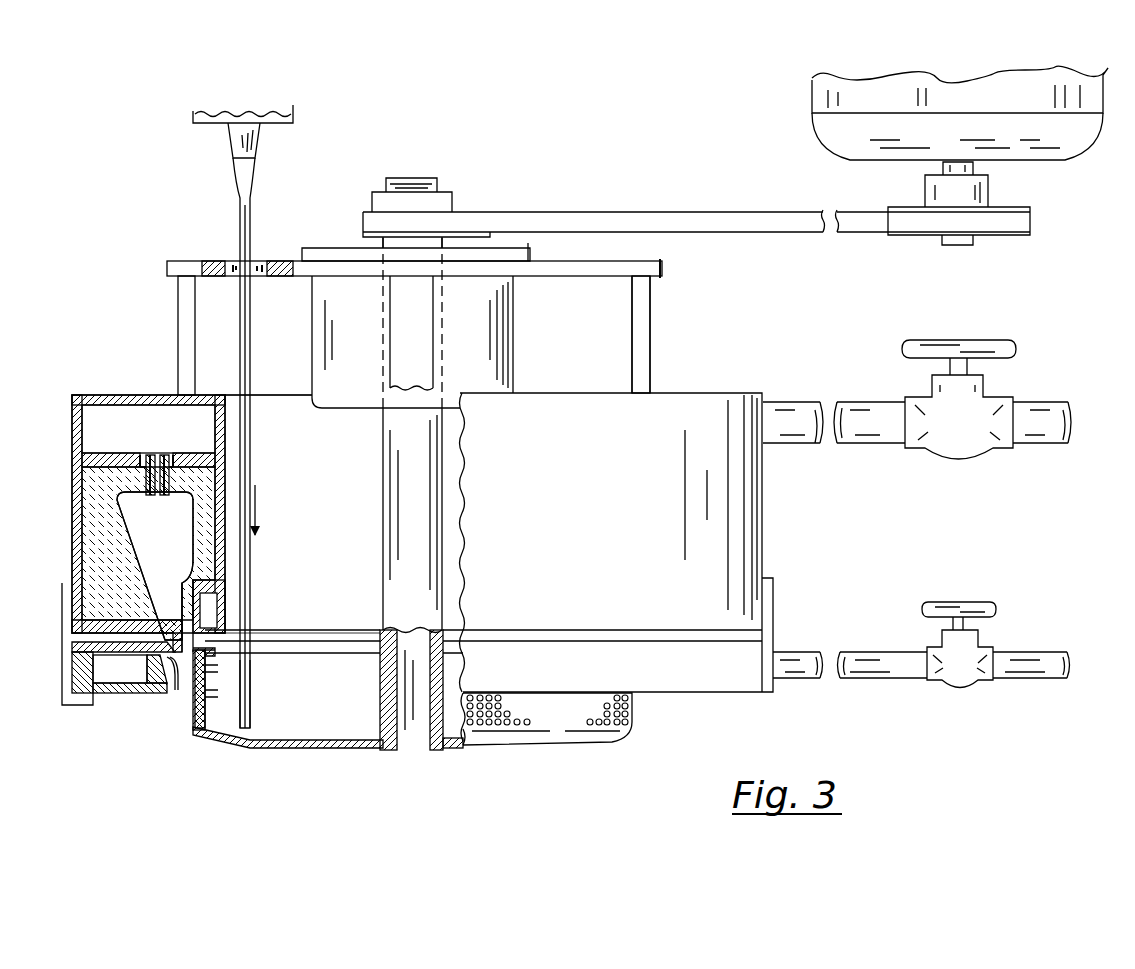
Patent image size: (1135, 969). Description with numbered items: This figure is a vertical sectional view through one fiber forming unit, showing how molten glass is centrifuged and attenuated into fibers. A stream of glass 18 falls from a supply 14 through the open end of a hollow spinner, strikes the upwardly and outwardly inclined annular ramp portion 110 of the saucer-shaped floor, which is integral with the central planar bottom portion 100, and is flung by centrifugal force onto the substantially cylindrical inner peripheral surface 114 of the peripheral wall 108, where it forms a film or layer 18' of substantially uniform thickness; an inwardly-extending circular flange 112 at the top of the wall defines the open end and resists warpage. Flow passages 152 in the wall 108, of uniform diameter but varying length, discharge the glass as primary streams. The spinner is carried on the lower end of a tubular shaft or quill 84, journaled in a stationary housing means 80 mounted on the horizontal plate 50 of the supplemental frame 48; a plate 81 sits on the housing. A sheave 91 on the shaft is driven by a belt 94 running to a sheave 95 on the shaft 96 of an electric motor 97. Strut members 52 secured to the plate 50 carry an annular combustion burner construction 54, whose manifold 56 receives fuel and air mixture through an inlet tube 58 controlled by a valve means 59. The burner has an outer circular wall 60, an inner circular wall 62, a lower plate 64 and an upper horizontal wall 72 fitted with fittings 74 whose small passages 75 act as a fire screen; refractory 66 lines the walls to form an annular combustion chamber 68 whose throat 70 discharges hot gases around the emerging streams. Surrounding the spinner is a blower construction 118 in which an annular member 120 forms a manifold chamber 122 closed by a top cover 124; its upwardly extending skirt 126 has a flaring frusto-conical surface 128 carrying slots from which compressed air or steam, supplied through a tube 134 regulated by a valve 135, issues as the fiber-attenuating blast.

The funnel 14 is at (196, 113).
The stream of glass 18 is at (209, 443).
The film or layer of glass 18' is at (273, 694).
The support means or supplemental frame 48 is at (655, 292).
The horizontally disposed plate 50 is at (664, 268).
The strut members 52 is at (178, 290).
The annular combustion burner construction 54 is at (70, 390).
The annularly-shaped manifold 56 is at (163, 393).
The inlet tube 58 is at (808, 402).
The valve means 59 is at (915, 392).
The outer circular wall 60 is at (72, 445).
The inner circular wall 62 is at (227, 488).
The base or lower plate 64 is at (102, 582).
The high temperature resistant refractory 66 is at (97, 478).
The annular combustion zone or chamber 68 is at (165, 530).
The annular throat or discharge passage 70 is at (184, 590).
The upper substantially horizontal wall 72 is at (102, 452).
The fittings 74 is at (165, 455).
The small passages 75 is at (148, 455).
The stationary housing means 80 is at (515, 307).
The plate 81 is at (532, 256).
The tubular member, shaft or quill 84 is at (383, 495).
The sheave or pulley 91 is at (460, 212).
The driving belt 94 is at (754, 212).
The sheave or pulley 95 is at (896, 238).
The motor shaft 96 is at (943, 167).
The electrically energizable motor 97 is at (812, 95).
The central planar bottom portion 100 is at (316, 736).
The peripheral wall 108 is at (197, 702).
The frusto-conical inclined section or annular ramp 110 is at (250, 736).
The inwardly-extending circular flange 112 is at (212, 656).
The inner peripheral surface 114 is at (207, 695).
The blower construction 118 is at (112, 706).
The annularly-shaped member 120 is at (93, 693).
The annular manifold or chamber 122 is at (133, 684).
The top plate or cover 124 is at (100, 645).
The circular wall or skirt portion 126 is at (157, 690).
The frusto-conically shaped surface 128 is at (172, 690).
The tubular member 134 is at (810, 652).
The valve 135 is at (932, 645).
The flow passages 152 is at (515, 725).